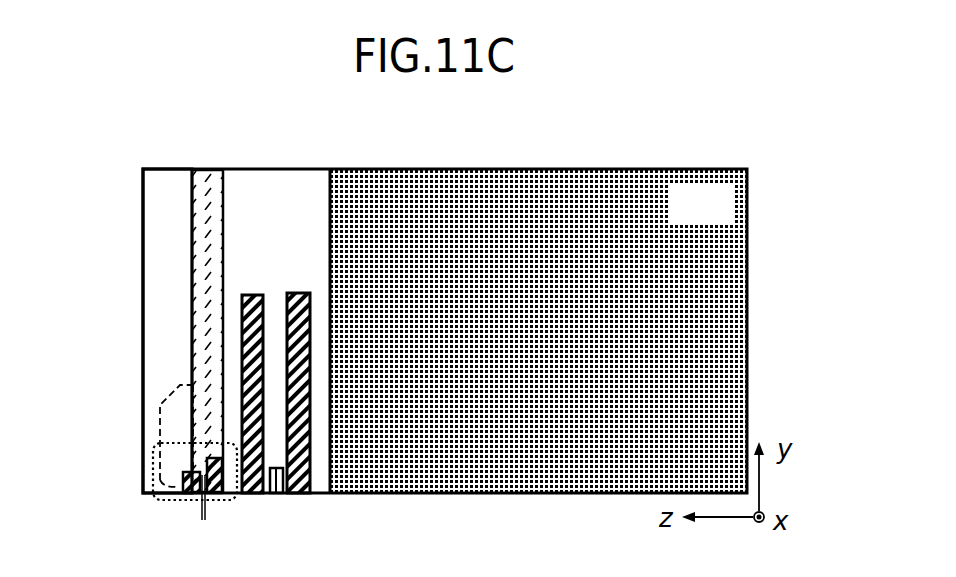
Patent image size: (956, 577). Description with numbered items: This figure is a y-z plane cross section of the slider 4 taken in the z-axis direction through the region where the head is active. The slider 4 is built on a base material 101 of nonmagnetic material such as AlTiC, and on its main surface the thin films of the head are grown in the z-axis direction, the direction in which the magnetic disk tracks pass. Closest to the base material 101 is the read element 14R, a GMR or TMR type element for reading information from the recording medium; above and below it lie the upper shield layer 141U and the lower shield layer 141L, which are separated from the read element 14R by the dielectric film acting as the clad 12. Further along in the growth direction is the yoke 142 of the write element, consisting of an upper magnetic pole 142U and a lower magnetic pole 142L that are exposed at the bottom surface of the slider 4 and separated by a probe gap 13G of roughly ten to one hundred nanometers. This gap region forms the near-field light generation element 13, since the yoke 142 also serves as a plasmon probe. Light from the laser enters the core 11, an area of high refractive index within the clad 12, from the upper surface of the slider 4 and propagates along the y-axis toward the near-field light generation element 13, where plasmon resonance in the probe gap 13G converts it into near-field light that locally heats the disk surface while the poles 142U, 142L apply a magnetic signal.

The base material 101 is at (748, 315).
The slider 4 is at (709, 222).
The core 11 is at (195, 263).
The clad 12 is at (167, 320).
The upper shield layer 141U is at (255, 295).
The lower shield layer 141L is at (300, 293).
The upper magnetic pole 142U is at (183, 487).
The lower magnetic pole 142L is at (239, 493).
The yoke 142 is at (160, 409).
The near-field light generation element 13 is at (153, 478).
The probe gap 13G is at (216, 514).
The read element 14R is at (273, 495).